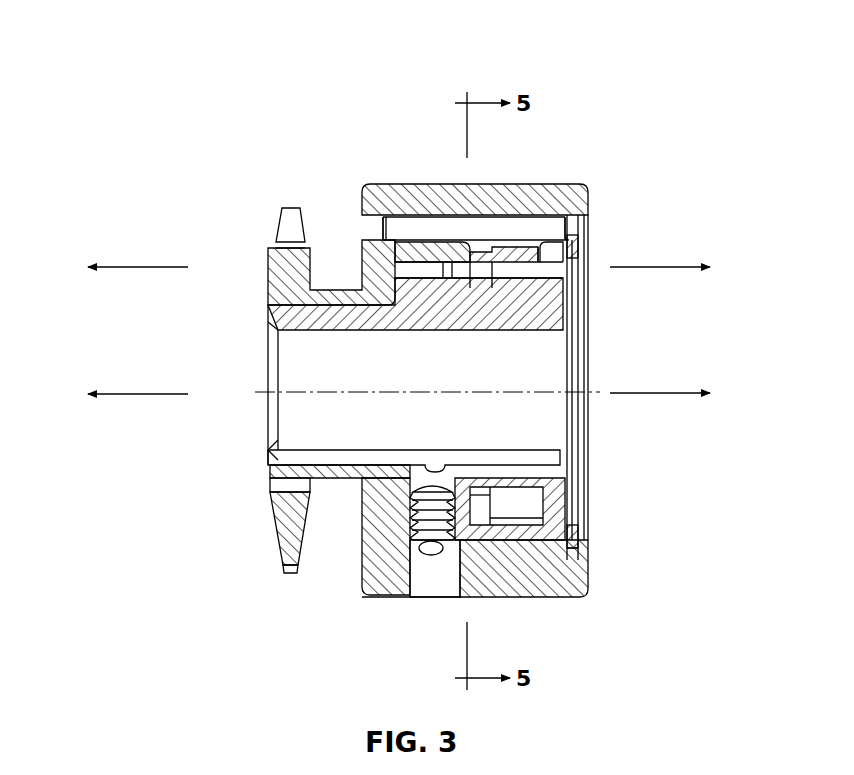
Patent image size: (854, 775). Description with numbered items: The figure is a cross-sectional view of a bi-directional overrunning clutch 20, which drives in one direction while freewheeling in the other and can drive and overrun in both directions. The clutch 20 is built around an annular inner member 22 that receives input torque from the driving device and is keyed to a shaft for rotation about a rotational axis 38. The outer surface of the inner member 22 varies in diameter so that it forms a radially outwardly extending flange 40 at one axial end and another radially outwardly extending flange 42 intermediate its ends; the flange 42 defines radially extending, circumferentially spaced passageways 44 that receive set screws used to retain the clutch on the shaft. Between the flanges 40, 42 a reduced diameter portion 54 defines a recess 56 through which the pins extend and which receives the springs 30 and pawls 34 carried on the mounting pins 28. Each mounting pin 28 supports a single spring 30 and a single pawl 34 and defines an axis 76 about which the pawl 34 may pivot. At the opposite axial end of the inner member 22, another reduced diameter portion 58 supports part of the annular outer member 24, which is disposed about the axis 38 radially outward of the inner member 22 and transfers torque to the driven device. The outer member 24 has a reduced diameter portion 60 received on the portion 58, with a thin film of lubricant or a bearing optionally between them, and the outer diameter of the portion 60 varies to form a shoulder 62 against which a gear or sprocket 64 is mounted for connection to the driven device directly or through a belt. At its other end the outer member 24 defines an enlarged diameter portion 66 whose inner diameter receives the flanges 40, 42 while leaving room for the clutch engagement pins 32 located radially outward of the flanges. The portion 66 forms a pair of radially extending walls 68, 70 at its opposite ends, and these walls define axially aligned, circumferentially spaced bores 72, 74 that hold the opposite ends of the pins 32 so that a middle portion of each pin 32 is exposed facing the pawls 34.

The clutch 20 is at (242, 153).
The inner member 22 is at (380, 322).
The outer member 24 is at (437, 193).
The mounting pins 28 is at (491, 272).
The springs 30 is at (467, 293).
The clutch engagement pins 32 is at (478, 223).
The pawls 34 is at (514, 251).
The rotational axis 38 is at (670, 390).
The radially outwardly extending flange 40 is at (572, 246).
The radially outwardly extending flange 42 is at (423, 246).
The passageways 44 is at (427, 566).
The reduced diameter portion 54 is at (510, 319).
The recess 56 is at (533, 302).
The reduced diameter portion 58 is at (355, 468).
The reduced diameter portion 60 is at (354, 482).
The shoulder 62 is at (298, 487).
The gear or sprocket 64 is at (288, 545).
The enlarged diameter portion 66 is at (541, 582).
The radially extending wall 68 is at (376, 270).
The radially extending wall 70 is at (579, 552).
The bores 72 is at (383, 228).
The bores 74 is at (573, 228).
The axis 76 is at (670, 264).